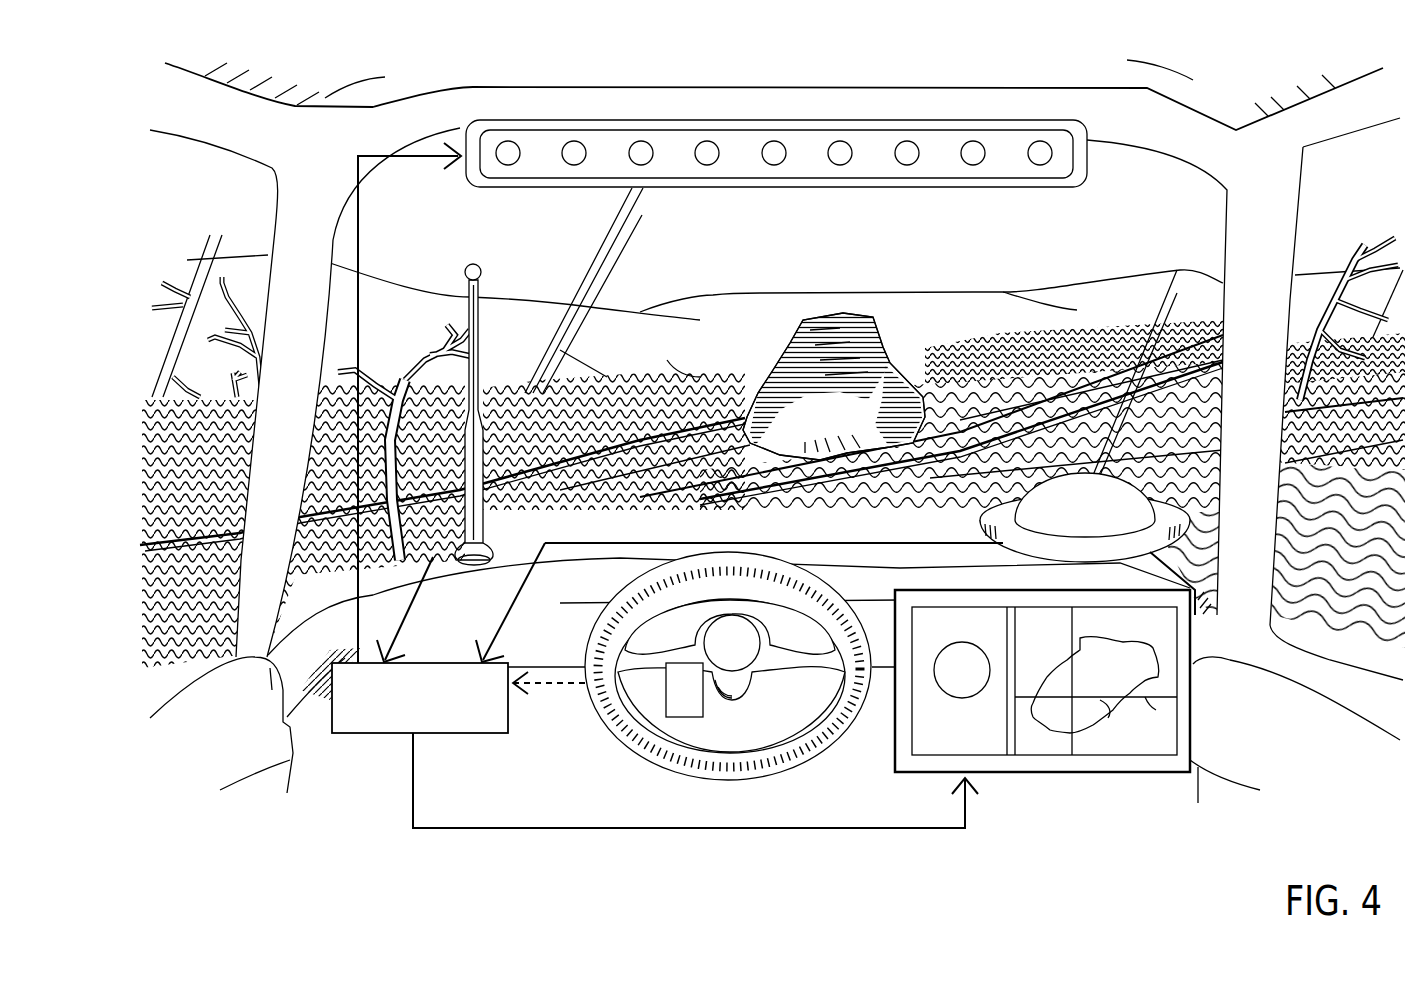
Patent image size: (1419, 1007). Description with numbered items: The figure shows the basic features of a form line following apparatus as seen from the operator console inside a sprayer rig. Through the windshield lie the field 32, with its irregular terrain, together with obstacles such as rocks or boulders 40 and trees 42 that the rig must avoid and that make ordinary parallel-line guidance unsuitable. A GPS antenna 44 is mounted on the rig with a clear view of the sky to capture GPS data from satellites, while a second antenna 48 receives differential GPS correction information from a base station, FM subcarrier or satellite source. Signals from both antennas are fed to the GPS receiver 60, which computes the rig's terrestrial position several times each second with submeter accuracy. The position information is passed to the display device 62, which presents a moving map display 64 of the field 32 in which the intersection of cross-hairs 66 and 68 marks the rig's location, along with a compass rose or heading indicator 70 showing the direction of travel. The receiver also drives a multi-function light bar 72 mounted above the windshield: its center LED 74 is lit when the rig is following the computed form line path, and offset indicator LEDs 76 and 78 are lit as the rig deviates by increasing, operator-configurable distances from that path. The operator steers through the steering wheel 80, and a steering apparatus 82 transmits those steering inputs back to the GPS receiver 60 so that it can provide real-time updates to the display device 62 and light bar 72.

The field 32 is at (1140, 707).
The rocks or boulders 40 is at (834, 386).
The trees 42 is at (384, 376).
The GPS antenna 44 is at (1095, 442).
The antenna 48 is at (475, 266).
The GPS receiver 60 is at (420, 698).
The display device 62 is at (1042, 702).
The moving map display 64 is at (1096, 681).
The cross-hair 66 is at (1068, 641).
The cross-hair 68 is at (1159, 714).
The compass rose or heading indicator 70 is at (958, 675).
The multi-function light bar 72 is at (776, 176).
The LED 74 is at (806, 146).
The offset indicator LED 76 is at (872, 146).
The offset indicator LED 78 is at (919, 156).
The steering wheel 80 is at (728, 666).
The steering apparatus 82 is at (684, 690).